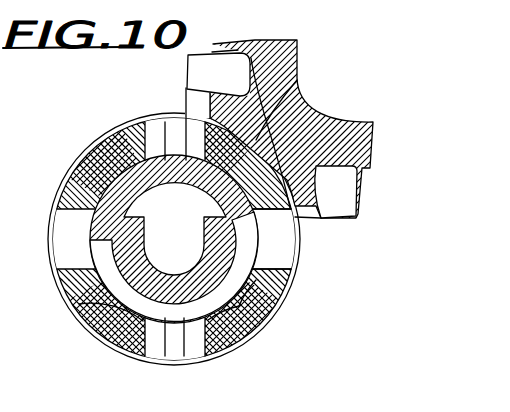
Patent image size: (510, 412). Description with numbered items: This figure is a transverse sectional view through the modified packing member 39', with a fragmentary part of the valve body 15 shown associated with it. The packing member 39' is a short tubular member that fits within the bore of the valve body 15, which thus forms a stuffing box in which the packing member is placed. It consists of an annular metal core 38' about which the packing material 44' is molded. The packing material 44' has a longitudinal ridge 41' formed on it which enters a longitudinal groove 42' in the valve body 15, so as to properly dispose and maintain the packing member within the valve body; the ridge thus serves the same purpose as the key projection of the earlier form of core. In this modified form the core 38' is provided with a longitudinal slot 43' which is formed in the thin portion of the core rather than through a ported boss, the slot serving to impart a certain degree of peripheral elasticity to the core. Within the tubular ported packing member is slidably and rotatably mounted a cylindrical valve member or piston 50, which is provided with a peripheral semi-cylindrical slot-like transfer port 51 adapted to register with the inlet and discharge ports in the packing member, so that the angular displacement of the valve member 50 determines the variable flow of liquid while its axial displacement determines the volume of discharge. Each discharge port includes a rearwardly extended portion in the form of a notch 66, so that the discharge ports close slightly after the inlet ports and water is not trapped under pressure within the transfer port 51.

The valve body 15 is at (335, 143).
The core 38' is at (96, 331).
The packing member 39' is at (244, 347).
The longitudinal ridge 41' is at (267, 105).
The longitudinal groove 42' is at (311, 133).
The longitudinal slot 43' is at (276, 239).
The packing material 44' is at (280, 311).
The valve member or piston 50 is at (200, 189).
The transfer port 51 is at (220, 294).
The notch 66 is at (166, 350).